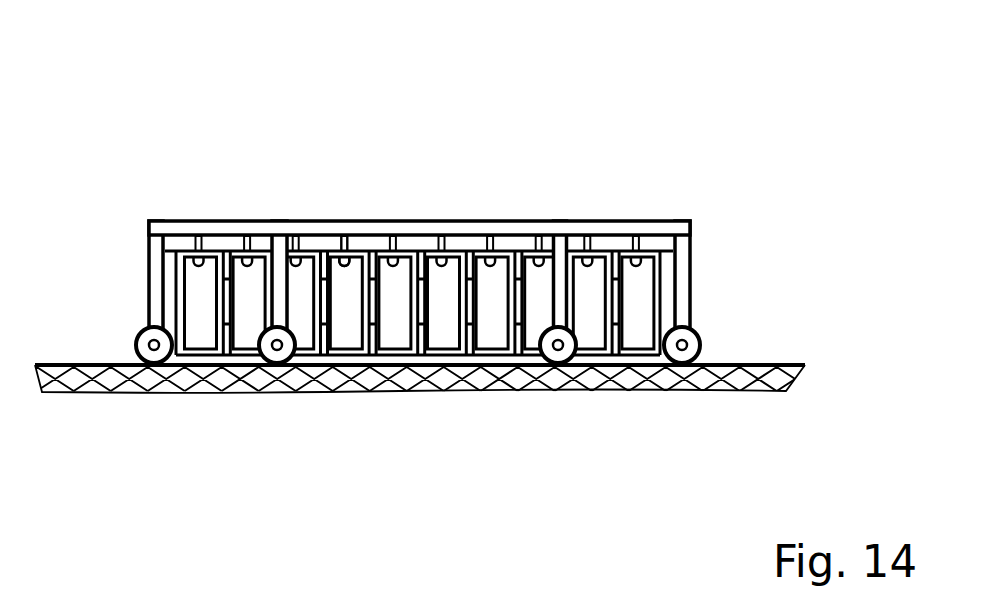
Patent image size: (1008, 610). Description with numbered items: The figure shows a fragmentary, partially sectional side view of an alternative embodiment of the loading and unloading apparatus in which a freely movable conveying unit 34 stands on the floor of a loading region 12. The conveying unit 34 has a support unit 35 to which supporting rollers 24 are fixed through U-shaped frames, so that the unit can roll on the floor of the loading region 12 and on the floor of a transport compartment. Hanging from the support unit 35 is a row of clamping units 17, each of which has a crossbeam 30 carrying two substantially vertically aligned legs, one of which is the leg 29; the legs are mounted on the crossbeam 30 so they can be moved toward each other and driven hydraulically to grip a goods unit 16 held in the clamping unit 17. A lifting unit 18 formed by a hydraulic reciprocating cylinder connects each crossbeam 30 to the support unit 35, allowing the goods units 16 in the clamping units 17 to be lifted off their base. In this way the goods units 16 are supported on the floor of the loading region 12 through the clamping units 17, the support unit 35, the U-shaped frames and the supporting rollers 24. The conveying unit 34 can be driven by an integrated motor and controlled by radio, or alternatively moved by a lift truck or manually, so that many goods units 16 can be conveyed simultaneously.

The loading region 12 is at (782, 347).
The goods unit 16 is at (330, 338).
The clamping unit 17 is at (500, 357).
The lifting unit 18 is at (366, 228).
The supporting roller 24 is at (148, 352).
The leg 29 is at (397, 317).
The crossbeam 30 is at (346, 252).
The freely movable conveying unit 34 is at (426, 282).
The support unit 35 is at (647, 230).